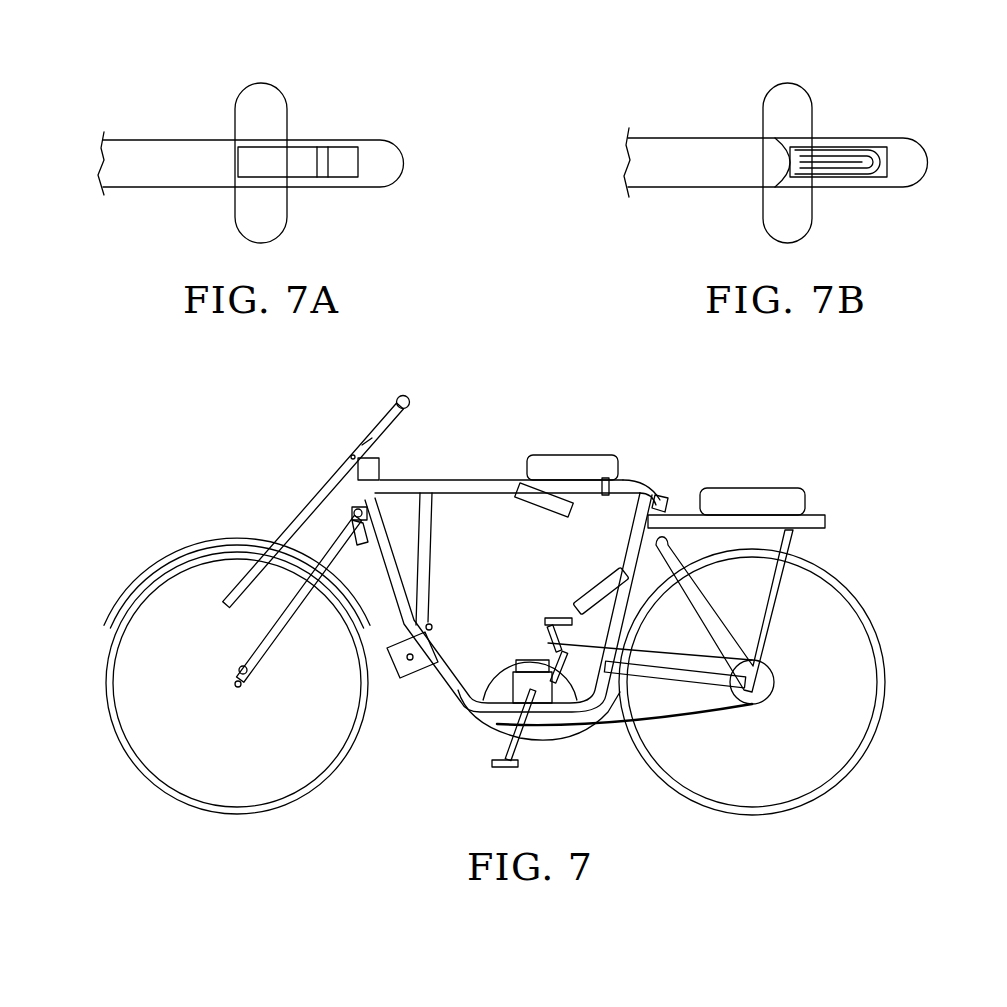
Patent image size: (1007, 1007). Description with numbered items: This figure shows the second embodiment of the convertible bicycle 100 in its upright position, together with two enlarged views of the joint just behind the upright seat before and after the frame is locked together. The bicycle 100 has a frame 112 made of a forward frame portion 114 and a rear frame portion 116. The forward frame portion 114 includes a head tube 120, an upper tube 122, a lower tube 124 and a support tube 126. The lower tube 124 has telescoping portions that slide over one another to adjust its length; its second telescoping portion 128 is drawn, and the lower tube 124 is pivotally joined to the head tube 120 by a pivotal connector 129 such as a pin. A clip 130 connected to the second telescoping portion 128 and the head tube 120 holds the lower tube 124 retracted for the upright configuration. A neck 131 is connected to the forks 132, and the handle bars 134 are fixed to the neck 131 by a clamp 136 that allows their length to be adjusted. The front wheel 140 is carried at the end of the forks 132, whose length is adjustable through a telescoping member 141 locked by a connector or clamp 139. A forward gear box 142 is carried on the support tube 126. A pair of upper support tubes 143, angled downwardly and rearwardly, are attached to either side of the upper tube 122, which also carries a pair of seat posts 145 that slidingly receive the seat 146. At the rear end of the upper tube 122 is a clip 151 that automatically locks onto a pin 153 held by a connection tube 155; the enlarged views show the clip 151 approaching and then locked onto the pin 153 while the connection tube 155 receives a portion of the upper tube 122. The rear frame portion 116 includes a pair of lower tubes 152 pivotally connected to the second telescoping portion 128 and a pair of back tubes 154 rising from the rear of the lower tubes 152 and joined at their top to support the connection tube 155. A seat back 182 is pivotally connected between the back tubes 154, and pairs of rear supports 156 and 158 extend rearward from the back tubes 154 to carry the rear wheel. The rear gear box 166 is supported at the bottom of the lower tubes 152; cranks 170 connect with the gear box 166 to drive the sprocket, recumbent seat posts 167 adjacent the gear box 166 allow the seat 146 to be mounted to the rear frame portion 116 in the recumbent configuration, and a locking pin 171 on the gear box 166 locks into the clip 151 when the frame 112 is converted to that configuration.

In FIG. 7, the bicycle 100 is at (558, 394).
In FIG. 7, the frame 112 is at (495, 585).
In FIG. 7, the forward frame portion 114 is at (304, 493).
In FIG. 7, the rear frame portion 116 is at (802, 547).
In FIG. 7, the head tube 120 is at (357, 476).
In FIG. 7B, the upper tube 122 is at (690, 157).
In FIG. 7, the upper tube 122 is at (403, 480).
In FIG. 7, the lower tube 124 is at (380, 568).
In FIG. 7, the support tube 126 is at (427, 523).
In FIG. 7, the second telescoping portion 128 is at (404, 590).
In FIG. 7, the pivotal connector 129 is at (354, 514).
In FIG. 7, the clip 130 is at (357, 548).
In FIG. 7, the neck 131 is at (372, 433).
In FIG. 7, the forks 132 is at (267, 638).
In FIG. 7, the handle bars 134 is at (373, 435).
In FIG. 7, the clamp 136 is at (355, 456).
In FIG. 7, the connector or clamp 139 is at (242, 668).
In FIG. 7, the front wheel 140 is at (168, 793).
In FIG. 7, the telescoping member 141 is at (235, 687).
In FIG. 7, the forward gear box 142 is at (407, 678).
In FIG. 7, the upper support tubes 143 is at (560, 518).
In FIG. 7, the seat posts 145 is at (610, 483).
In FIG. 7, the seat 146 is at (583, 455).
In FIG. 7B, the clip 151 is at (830, 160).
In FIG. 7, the lower tubes 152 is at (473, 708).
In FIG. 7A, the pin 153 is at (330, 163).
In FIG. 7B, the pin 153 is at (855, 173).
In FIG. 7, the pin 153 is at (427, 620).
In FIG. 7A, the back tubes 154 is at (257, 95).
In FIG. 7B, the back tubes 154 is at (790, 99).
In FIG. 7, the back tubes 154 is at (618, 596).
In FIG. 7A, the connection tube 155 is at (382, 170).
In FIG. 7B, the connection tube 155 is at (907, 177).
In FIG. 7, the rear supports 156 is at (722, 625).
In FIG. 7, the rear supports 158 is at (683, 682).
In FIG. 7, the rear gear box 166 is at (543, 700).
In FIG. 7, the recumbent seat posts 167 is at (615, 718).
In FIG. 7, the cranks 170 is at (548, 634).
In FIG. 7, the locking pin 171 is at (522, 650).
In FIG. 7, the seat back 182 is at (620, 556).